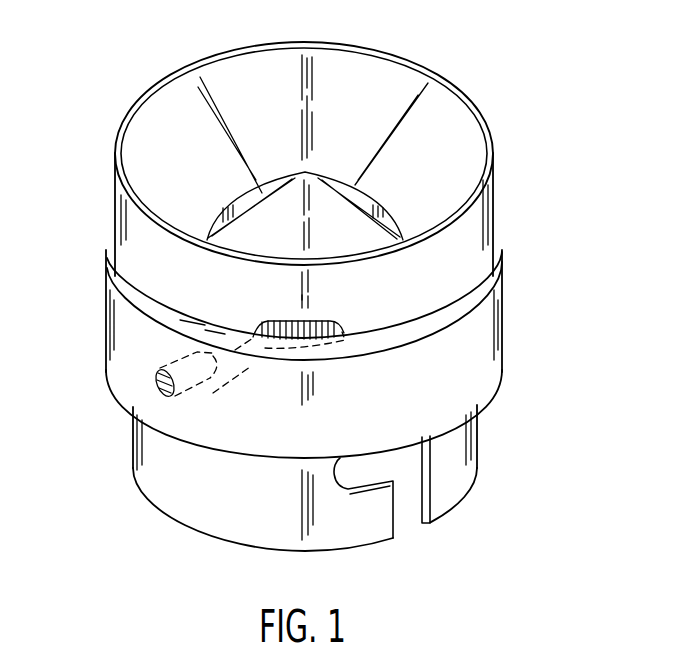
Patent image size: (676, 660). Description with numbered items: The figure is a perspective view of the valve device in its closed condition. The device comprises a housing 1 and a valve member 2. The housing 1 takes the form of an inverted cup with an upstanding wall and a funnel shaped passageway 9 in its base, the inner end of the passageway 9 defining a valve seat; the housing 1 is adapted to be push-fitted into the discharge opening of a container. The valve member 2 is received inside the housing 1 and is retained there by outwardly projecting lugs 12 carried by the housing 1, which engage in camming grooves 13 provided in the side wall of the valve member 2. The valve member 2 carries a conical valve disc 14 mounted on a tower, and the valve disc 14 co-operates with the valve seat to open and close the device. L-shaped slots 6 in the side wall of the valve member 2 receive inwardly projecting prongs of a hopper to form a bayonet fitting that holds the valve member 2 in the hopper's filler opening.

The housing 1 is at (512, 263).
The valve member 2 is at (512, 443).
The L-shaped slots 6 is at (399, 515).
The funnel shaped passageway 9 is at (353, 83).
The outwardly projecting lugs 12 is at (157, 380).
The camming grooves 13 is at (340, 323).
The conical valve disc 14 is at (277, 202).